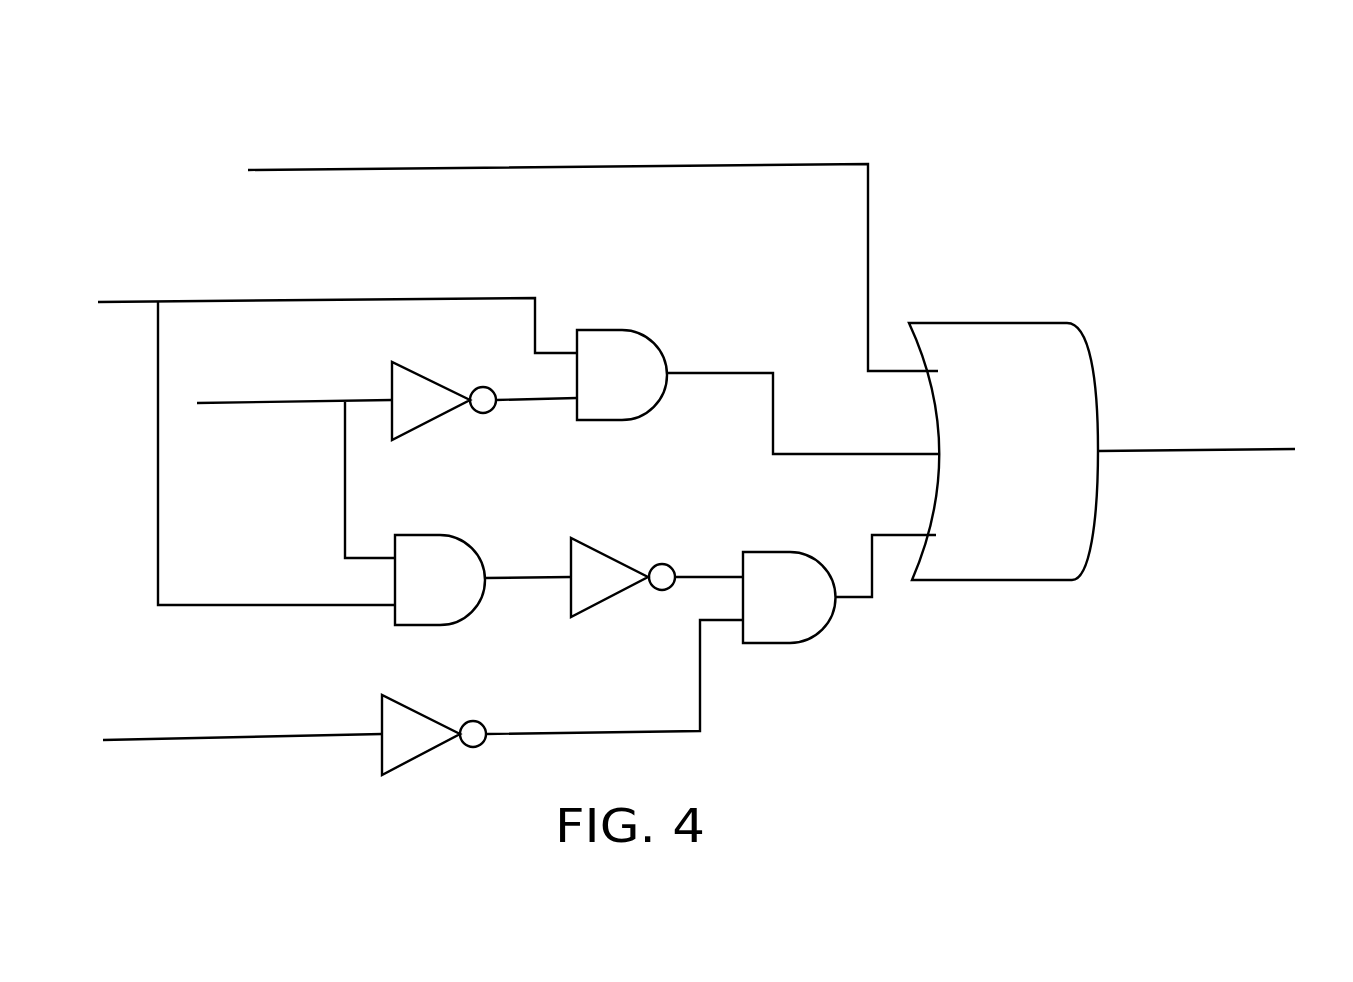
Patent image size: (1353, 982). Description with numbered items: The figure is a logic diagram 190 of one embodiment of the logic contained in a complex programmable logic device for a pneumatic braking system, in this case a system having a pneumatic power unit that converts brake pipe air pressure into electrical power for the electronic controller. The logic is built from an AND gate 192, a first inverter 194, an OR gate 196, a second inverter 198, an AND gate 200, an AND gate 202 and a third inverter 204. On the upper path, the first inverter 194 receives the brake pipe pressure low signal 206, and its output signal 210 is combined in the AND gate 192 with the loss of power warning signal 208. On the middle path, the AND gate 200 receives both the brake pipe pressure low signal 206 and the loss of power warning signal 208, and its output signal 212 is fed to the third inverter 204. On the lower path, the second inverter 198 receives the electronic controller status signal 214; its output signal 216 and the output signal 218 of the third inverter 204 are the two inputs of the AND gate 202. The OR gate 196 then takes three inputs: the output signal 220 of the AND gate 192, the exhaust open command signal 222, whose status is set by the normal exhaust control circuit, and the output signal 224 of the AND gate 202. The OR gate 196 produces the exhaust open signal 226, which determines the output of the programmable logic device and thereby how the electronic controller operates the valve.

The logic diagram 190 is at (198, 84).
The AND gate 192 is at (598, 330).
The first inverter 194 is at (437, 378).
The OR gate 196 is at (1015, 323).
The second inverter 198 is at (423, 713).
The AND gate 200 is at (448, 534).
The AND gate 202 is at (777, 552).
The third inverter 204 is at (615, 551).
The brake pipe pressure low signal 206 is at (270, 383).
The loss of power warning signal 208 is at (238, 279).
The output signal of inverter 210 is at (537, 404).
The output signal of AND gate 212 is at (542, 577).
The electronic controller status signal 214 is at (247, 716).
The output signal of second inverter 216 is at (592, 732).
The output signal of third inverter 218 is at (722, 577).
The output signal of AND gate 220 is at (717, 373).
The exhaust open command signal 222 is at (435, 143).
The output signal of AND gate 224 is at (902, 535).
The exhaust open signal 226 is at (1225, 426).